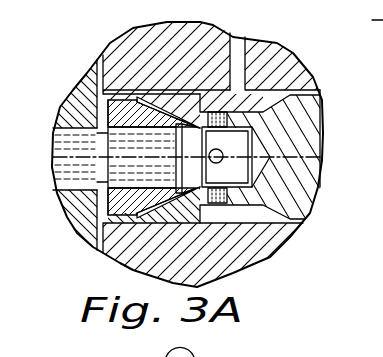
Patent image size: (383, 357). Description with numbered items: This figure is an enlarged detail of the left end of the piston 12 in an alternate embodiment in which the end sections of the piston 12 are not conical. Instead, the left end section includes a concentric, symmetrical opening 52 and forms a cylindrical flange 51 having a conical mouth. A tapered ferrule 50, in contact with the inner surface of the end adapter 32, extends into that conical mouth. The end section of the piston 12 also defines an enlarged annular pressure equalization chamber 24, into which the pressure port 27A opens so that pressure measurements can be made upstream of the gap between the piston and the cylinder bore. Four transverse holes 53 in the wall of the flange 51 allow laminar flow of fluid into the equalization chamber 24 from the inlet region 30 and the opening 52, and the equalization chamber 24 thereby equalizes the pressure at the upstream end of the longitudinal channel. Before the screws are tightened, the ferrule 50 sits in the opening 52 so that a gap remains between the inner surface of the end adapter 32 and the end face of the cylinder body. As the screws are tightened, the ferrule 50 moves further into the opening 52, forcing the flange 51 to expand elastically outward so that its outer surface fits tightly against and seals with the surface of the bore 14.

The piston 12 is at (303, 184).
The bore 14 is at (246, 219).
The equalization chamber 24 is at (216, 101).
The pressure port 27A is at (241, 65).
The inlet region 30 is at (76, 171).
The end adapter 32 is at (82, 222).
The tapered ferrule 50 is at (125, 103).
The flange 51 is at (165, 100).
The opening 52 is at (186, 167).
The transverse holes 53 is at (217, 149).